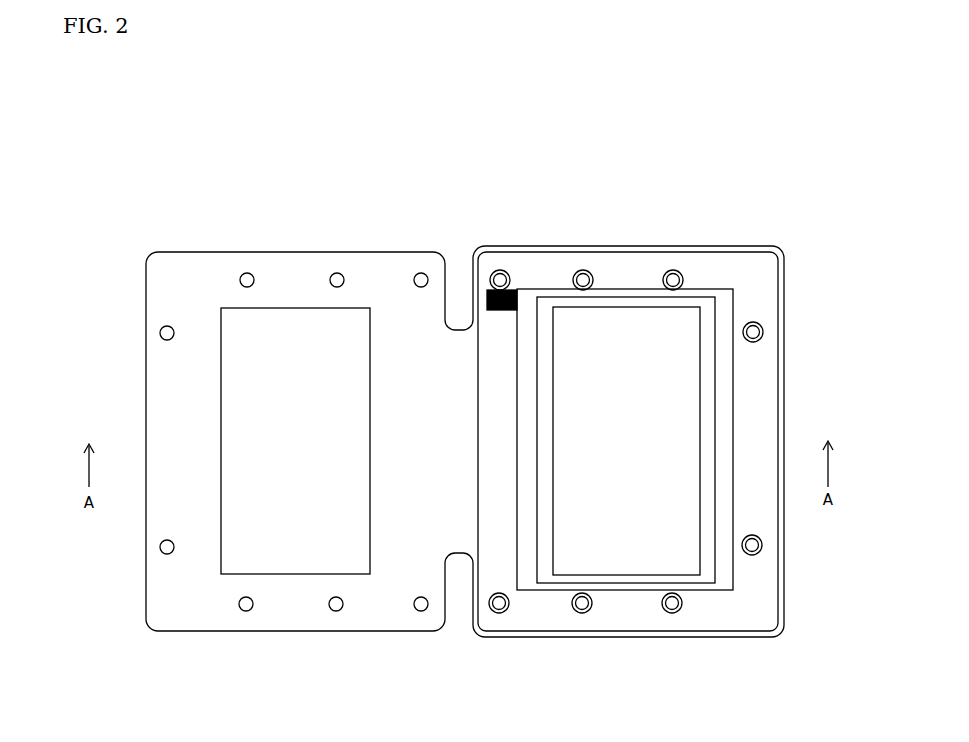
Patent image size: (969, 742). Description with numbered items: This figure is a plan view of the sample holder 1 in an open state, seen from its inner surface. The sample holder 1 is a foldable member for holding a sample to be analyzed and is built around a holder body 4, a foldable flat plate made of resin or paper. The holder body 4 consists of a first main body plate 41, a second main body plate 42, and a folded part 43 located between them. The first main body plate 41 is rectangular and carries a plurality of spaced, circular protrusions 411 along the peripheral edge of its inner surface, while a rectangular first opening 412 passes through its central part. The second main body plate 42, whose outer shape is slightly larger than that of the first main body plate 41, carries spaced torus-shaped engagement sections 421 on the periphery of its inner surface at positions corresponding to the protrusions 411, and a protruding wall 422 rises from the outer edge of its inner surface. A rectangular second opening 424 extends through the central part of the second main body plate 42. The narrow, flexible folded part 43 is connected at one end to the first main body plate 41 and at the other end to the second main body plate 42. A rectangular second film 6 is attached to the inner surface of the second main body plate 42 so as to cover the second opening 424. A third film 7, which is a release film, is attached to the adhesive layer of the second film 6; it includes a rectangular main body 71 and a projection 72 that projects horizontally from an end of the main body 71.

The sample holder 1 is at (648, 202).
The holder body 4 is at (207, 251).
The first main body plate 41 is at (282, 265).
The protrusions 411 is at (244, 273).
The first opening 412 is at (222, 400).
The second main body plate 42 is at (733, 265).
The engagement sections 421 is at (669, 271).
The protruding wall 422 is at (785, 275).
The second opening 424 is at (701, 393).
The folded part 43 is at (453, 347).
The second film 6 is at (714, 492).
The third film 7 is at (517, 466).
The main body 71 is at (518, 416).
The projection 72 is at (498, 311).